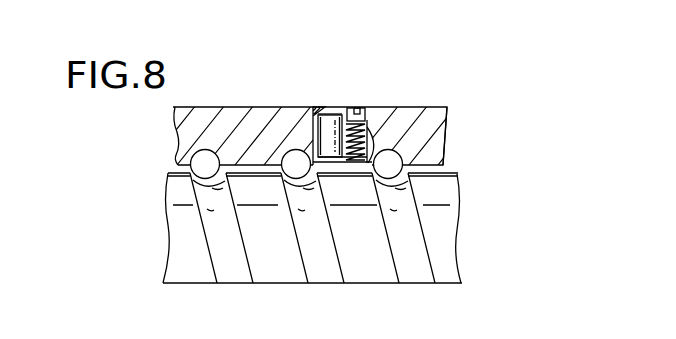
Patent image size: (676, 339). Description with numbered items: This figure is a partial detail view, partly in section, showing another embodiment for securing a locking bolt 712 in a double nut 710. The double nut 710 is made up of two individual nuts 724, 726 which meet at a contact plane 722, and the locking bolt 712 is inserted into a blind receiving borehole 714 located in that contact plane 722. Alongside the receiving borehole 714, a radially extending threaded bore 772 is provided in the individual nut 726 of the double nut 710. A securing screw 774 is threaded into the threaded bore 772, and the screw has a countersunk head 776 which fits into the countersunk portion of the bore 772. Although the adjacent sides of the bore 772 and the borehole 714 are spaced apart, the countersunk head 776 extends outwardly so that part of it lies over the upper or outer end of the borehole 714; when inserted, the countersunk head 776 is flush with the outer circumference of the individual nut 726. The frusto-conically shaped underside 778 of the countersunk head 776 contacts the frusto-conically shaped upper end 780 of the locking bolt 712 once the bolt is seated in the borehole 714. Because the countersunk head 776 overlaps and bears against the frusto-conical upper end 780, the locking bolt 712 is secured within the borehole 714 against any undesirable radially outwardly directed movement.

The double nut 710 is at (482, 107).
The locking bolt 712 is at (316, 131).
The receiving borehole 714 is at (318, 114).
The contact plane 722 is at (336, 107).
The individual nut 724 is at (176, 131).
The individual nut 726 is at (446, 147).
The threaded bore 772 is at (361, 166).
The securing screw 774 is at (352, 107).
The countersunk head 776 is at (367, 120).
The frusto-conically shaped underside 778 is at (378, 124).
The frusto-conically shaped upper end 780 is at (320, 112).